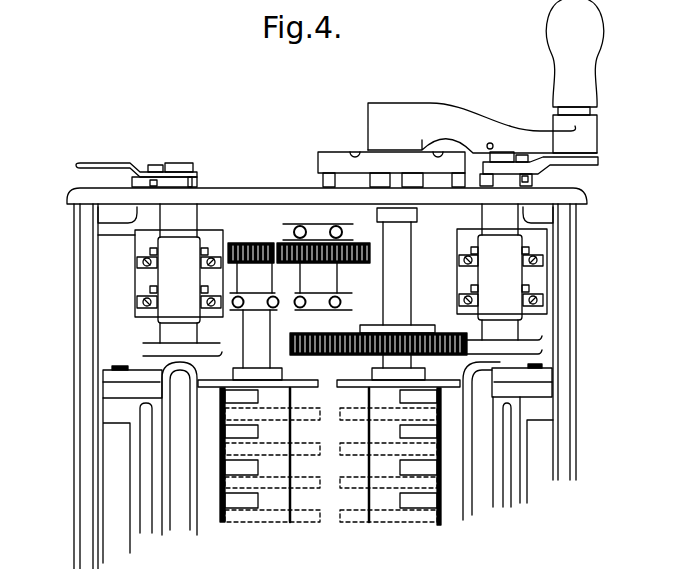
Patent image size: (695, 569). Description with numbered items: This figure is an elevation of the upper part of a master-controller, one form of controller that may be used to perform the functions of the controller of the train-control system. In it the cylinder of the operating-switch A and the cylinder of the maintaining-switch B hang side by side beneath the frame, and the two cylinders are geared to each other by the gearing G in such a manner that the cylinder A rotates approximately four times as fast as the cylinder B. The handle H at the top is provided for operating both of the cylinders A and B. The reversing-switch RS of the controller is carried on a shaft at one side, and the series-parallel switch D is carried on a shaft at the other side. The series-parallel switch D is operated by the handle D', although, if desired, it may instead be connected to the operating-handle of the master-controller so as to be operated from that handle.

The handle H is at (578, 67).
The handle D' is at (350, 176).
The series-parallel switch D is at (533, 272).
The reversing-switch RS is at (177, 288).
The gearing G is at (277, 244).
The cylinder of the operating-switch A is at (270, 500).
The cylinder of the maintaining-switch B is at (390, 500).